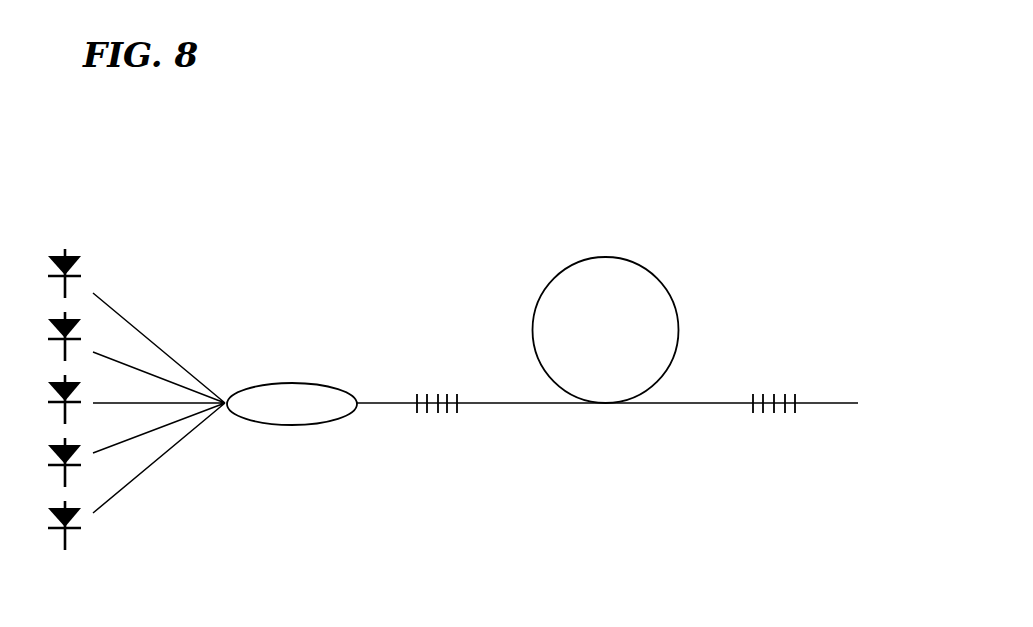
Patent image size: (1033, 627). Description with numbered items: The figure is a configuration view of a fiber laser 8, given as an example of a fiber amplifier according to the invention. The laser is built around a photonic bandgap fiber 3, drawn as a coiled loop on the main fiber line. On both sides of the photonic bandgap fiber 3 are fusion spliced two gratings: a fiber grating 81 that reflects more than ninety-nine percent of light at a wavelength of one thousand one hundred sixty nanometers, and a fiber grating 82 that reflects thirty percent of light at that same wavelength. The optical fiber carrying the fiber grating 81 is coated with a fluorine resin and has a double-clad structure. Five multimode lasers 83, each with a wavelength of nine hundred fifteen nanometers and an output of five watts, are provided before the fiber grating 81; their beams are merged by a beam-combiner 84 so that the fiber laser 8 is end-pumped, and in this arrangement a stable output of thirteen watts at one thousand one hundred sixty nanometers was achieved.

The fiber laser 8 is at (478, 255).
The multimode lasers 83 is at (73, 540).
The beam-combiner 84 is at (302, 383).
The fiber grating 81 is at (437, 412).
The photonic bandgap fiber 3 is at (618, 257).
The fiber grating 82 is at (787, 413).